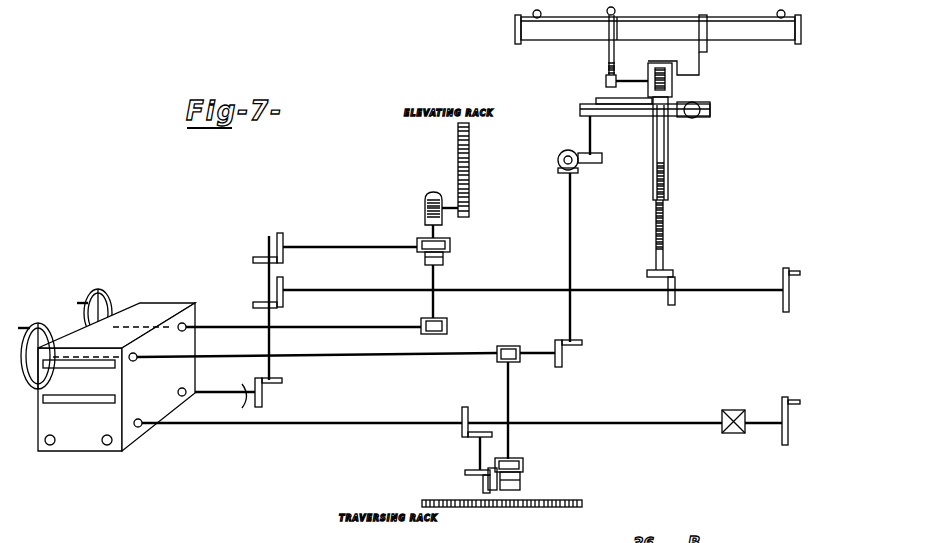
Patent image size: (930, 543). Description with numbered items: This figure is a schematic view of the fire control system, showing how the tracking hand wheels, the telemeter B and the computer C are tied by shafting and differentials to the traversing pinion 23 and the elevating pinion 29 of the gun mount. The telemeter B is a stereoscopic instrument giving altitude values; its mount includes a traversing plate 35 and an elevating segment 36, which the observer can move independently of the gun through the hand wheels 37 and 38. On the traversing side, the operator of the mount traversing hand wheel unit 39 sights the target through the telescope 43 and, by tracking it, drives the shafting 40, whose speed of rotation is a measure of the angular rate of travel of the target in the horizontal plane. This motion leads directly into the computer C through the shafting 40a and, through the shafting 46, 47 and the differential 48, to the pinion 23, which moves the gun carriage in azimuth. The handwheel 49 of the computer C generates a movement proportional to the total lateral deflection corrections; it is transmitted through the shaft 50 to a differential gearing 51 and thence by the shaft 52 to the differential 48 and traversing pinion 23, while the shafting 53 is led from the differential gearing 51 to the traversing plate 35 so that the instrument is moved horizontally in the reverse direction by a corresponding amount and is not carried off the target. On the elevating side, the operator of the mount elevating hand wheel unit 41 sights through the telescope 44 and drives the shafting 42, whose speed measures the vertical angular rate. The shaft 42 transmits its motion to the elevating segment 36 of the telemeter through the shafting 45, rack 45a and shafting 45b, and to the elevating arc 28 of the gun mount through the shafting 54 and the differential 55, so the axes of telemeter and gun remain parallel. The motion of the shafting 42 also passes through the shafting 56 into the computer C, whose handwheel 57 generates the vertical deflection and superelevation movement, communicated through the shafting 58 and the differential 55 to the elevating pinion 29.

The traversing pinion 23 is at (514, 508).
The elevating arc 28 is at (470, 160).
The elevating pinion 29 is at (470, 211).
The traversing plate 35 is at (628, 116).
The elevating segment 36 is at (606, 70).
The hand wheel 37 is at (694, 118).
The hand wheel 38 is at (607, 17).
The mount traversing hand wheel unit 39 is at (785, 447).
The shafting 40 is at (660, 421).
The shafting 40a is at (358, 426).
The mount elevating hand wheel unit 41 is at (781, 311).
The shafting 42 is at (716, 289).
The telescope 43 is at (537, 19).
The telescope 44 is at (780, 19).
The shafting 45 is at (661, 250).
The rack 45a is at (669, 194).
The shafting 45b is at (625, 78).
The shafting 46 is at (472, 447).
The shafting 47 is at (498, 490).
The differential 48 is at (524, 487).
The handwheel 49 is at (38, 329).
The shaft 50 is at (377, 356).
The differential gearing 51 is at (504, 347).
The shaft 52 is at (512, 405).
The shafting 53 is at (572, 318).
The shafting 54 is at (273, 280).
The differential 55 is at (451, 252).
The shafting 56 is at (241, 391).
The handwheel 57 is at (101, 296).
The shafting 58 is at (429, 299).
The telemeter B is at (658, 45).
The computer C is at (157, 310).